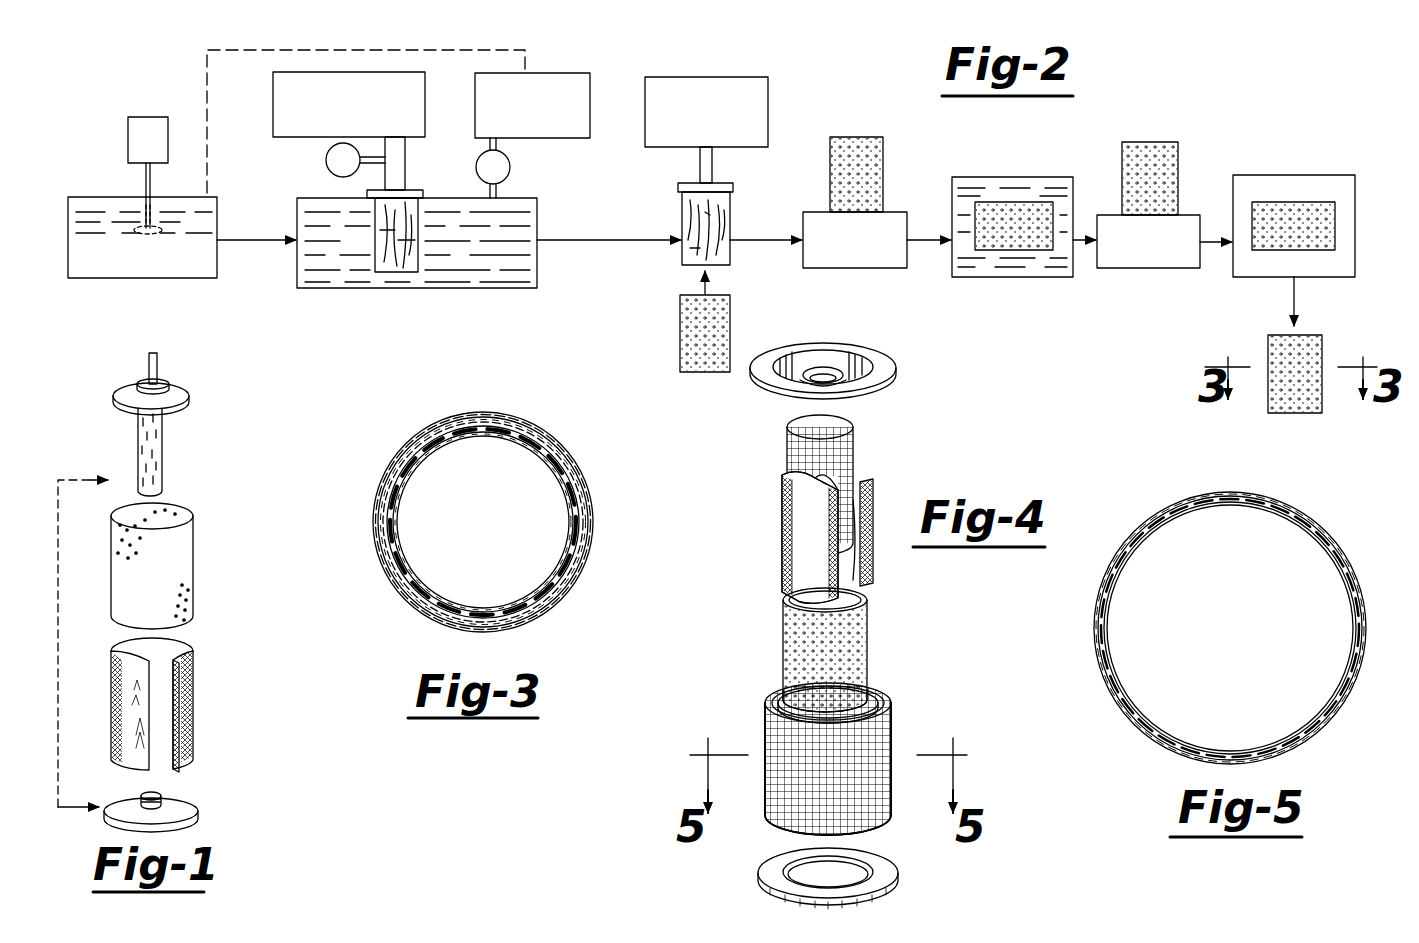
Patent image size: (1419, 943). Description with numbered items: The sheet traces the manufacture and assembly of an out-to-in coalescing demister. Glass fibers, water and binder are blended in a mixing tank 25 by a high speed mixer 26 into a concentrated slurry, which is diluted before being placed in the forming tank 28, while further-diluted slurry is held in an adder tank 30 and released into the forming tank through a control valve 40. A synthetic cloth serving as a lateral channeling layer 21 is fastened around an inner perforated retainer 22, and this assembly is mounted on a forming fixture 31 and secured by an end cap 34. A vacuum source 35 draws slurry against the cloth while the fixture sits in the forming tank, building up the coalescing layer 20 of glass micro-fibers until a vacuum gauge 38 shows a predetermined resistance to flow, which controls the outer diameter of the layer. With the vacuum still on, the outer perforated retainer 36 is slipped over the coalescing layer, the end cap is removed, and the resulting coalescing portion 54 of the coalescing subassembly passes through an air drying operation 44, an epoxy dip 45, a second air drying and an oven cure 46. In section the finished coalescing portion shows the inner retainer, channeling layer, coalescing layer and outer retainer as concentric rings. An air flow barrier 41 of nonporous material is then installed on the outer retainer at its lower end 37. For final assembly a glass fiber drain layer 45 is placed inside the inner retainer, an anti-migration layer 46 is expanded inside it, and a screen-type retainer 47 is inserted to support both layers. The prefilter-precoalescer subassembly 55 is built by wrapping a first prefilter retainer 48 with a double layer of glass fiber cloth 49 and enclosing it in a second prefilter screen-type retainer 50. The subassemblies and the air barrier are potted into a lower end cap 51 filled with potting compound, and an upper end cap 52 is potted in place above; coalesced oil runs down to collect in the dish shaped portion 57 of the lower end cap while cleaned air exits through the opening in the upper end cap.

In FIG. 2, the coalescing layer 20 is at (740, 212).
In FIG. 3, the coalescing layer 20 is at (418, 605).
In FIG. 1, the lateral channeling layer 21 is at (195, 672).
In FIG. 3, the lateral channeling layer 21 is at (397, 511).
In FIG. 1, the inner perforated retainer 22 is at (194, 528).
In FIG. 3, the inner perforated retainer 22 is at (553, 477).
In FIG. 2, the mixing tank 25 is at (205, 278).
In FIG. 2, the high speed mixer 26 is at (140, 120).
In FIG. 2, the forming tank 28 is at (500, 288).
In FIG. 2, the adder tank 30 is at (578, 72).
In FIG. 1, the adder tank 30 is at (163, 470).
In FIG. 2, the forming fixture 31 is at (412, 188).
In FIG. 1, the forming fixture 31 is at (189, 392).
In FIG. 1, the end cap 34 is at (199, 808).
In FIG. 2, the vacuum source 35 is at (273, 103).
In FIG. 2, the outer perforated retainer 36 is at (730, 318).
In FIG. 3, the outer perforated retainer 36 is at (410, 442).
In FIG. 4, the lower end 37 is at (855, 700).
In FIG. 2, the vacuum gauge 38 is at (326, 160).
In FIG. 2, the control valve 40 is at (510, 167).
In FIG. 4, the control valve 40 is at (770, 722).
In FIG. 4, the air flow barrier 41 is at (772, 700).
In FIG. 2, the air drying operation 44 is at (898, 210).
In FIG. 2, the epoxy dip; glass fiber drain layer 45 is at (1040, 176).
In FIG. 4, the epoxy dip; glass fiber drain layer 45 is at (873, 517).
In FIG. 2, the oven cure; anti-migration layer 46 is at (1355, 232).
In FIG. 4, the oven cure; anti-migration layer 46 is at (867, 578).
In FIG. 4, the screen-type retainer 47 is at (855, 428).
In FIG. 4, the first prefilter retainer 48 is at (885, 697).
In FIG. 5, the first prefilter retainer 48 is at (1107, 612).
In FIG. 5, the glass fiber cloth 49 is at (1292, 522).
In FIG. 4, the perforated canister 50 is at (888, 793).
In FIG. 5, the perforated canister 50 is at (1170, 508).
In FIG. 4, the lower end cap 51 is at (880, 898).
In FIG. 4, the upper end cap 52 is at (890, 368).
In FIG. 2, the coalescing portion of the coalescing subassembly 54 is at (852, 135).
In FIG. 3, the coalescing portion of the coalescing subassembly 54 is at (595, 517).
In FIG. 4, the coalescing portion of the coalescing subassembly 54 is at (781, 648).
In FIG. 4, the prefilter-precoalescer subassembly 55 is at (895, 755).
In FIG. 5, the prefilter-precoalescer subassembly 55 is at (1352, 700).
In FIG. 4, the dish shape portion 57 is at (790, 870).